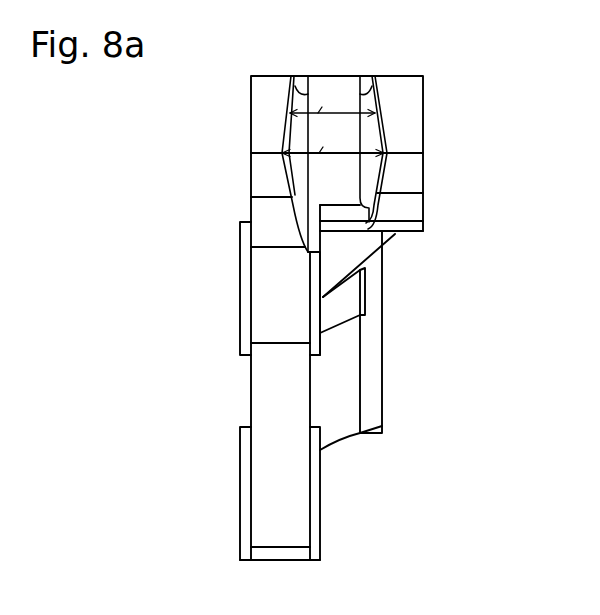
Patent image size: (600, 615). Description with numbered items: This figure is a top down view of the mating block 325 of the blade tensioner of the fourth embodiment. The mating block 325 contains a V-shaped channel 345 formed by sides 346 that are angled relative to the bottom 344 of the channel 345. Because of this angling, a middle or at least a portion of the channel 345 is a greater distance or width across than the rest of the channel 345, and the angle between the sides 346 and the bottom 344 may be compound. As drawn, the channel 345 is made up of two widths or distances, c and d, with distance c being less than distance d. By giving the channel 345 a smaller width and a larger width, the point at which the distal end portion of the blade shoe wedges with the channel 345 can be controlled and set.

The mating block 325 is at (267, 231).
The bottom of the channel 344 is at (333, 183).
The V-shaped channel 345 is at (291, 72).
The sides 346 is at (290, 174).